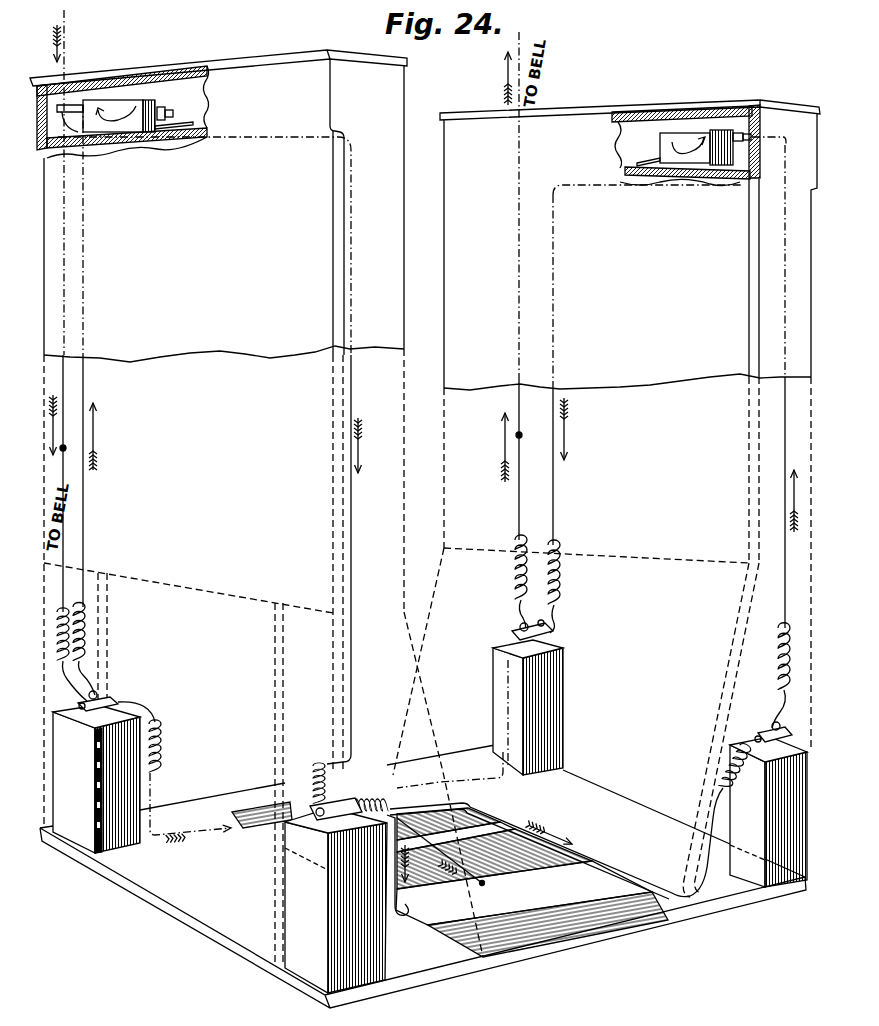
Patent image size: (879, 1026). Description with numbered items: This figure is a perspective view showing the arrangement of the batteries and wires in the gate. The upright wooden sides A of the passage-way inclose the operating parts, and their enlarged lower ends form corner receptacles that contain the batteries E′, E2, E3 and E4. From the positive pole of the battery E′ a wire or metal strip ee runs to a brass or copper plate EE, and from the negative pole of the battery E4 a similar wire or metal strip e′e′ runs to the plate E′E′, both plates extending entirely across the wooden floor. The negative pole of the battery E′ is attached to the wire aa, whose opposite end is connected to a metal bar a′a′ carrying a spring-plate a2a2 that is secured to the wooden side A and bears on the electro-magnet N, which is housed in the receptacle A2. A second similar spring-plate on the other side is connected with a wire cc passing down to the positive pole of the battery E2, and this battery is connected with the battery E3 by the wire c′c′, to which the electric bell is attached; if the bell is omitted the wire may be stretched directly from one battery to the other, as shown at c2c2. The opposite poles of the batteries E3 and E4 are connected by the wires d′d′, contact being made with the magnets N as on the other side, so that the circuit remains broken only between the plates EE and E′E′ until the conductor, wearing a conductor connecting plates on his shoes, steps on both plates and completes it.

The metal bar a′a′ is at (78, 105).
The electro-magnet N is at (131, 106).
The receptacle A2 is at (464, 127).
The spring-plate a2a2 is at (93, 148).
The wire c′c′ is at (90, 376).
The wire cc is at (85, 505).
The wire aa is at (352, 604).
The battery E2 is at (142, 772).
The wire c2c2 is at (250, 815).
The battery E′ is at (336, 895).
The plate E′E′ is at (452, 812).
The plate EE is at (532, 909).
The wire or metal strip ee is at (402, 918).
The wire or metal strip e′e′ is at (702, 897).
The battery E3 is at (560, 712).
The battery E4 is at (762, 804).
The sides of the gate or passage-way A is at (630, 498).
The wires d′d′ is at (555, 352).